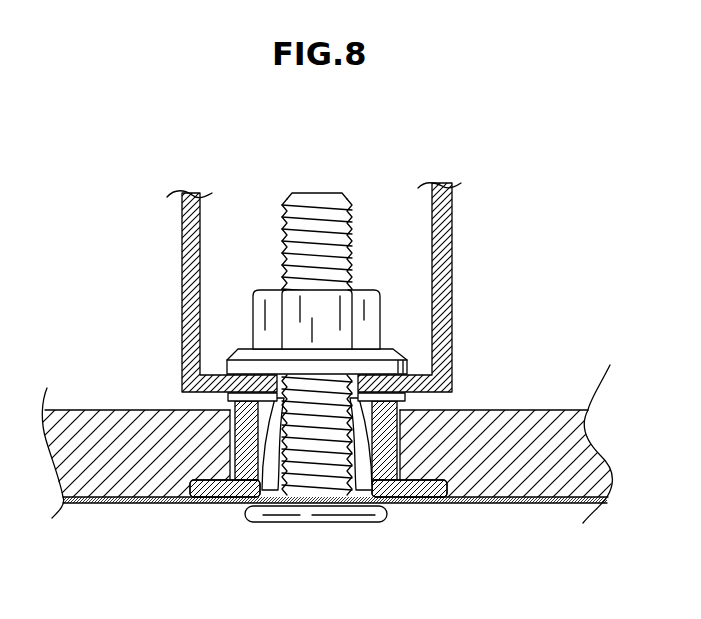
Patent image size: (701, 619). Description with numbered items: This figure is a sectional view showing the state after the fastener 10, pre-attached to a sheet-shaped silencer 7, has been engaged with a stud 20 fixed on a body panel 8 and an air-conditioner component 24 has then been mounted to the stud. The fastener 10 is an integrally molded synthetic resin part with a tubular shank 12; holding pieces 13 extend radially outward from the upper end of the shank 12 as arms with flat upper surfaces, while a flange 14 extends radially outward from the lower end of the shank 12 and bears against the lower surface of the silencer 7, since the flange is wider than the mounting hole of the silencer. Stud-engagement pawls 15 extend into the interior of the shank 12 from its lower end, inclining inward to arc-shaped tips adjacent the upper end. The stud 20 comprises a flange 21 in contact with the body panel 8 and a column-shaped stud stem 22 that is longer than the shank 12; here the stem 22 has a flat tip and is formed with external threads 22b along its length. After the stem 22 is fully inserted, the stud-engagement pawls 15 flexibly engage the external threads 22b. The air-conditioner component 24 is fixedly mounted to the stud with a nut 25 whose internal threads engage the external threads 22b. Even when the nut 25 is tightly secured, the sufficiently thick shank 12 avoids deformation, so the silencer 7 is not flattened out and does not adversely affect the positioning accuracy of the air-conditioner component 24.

The silencer 7 is at (552, 423).
The body panel 8 is at (565, 503).
The fastener 10 is at (312, 468).
The tubular shank 12 is at (440, 480).
The holding pieces 13 is at (400, 400).
The flange 14 is at (430, 500).
The stud-engagement pawls 15 is at (237, 402).
The stud 20 is at (318, 298).
The flange 21 is at (347, 512).
The stud stem 22 is at (283, 322).
The external threads 22b is at (282, 270).
The air-conditioner component 24 is at (452, 243).
The nut 25 is at (267, 323).